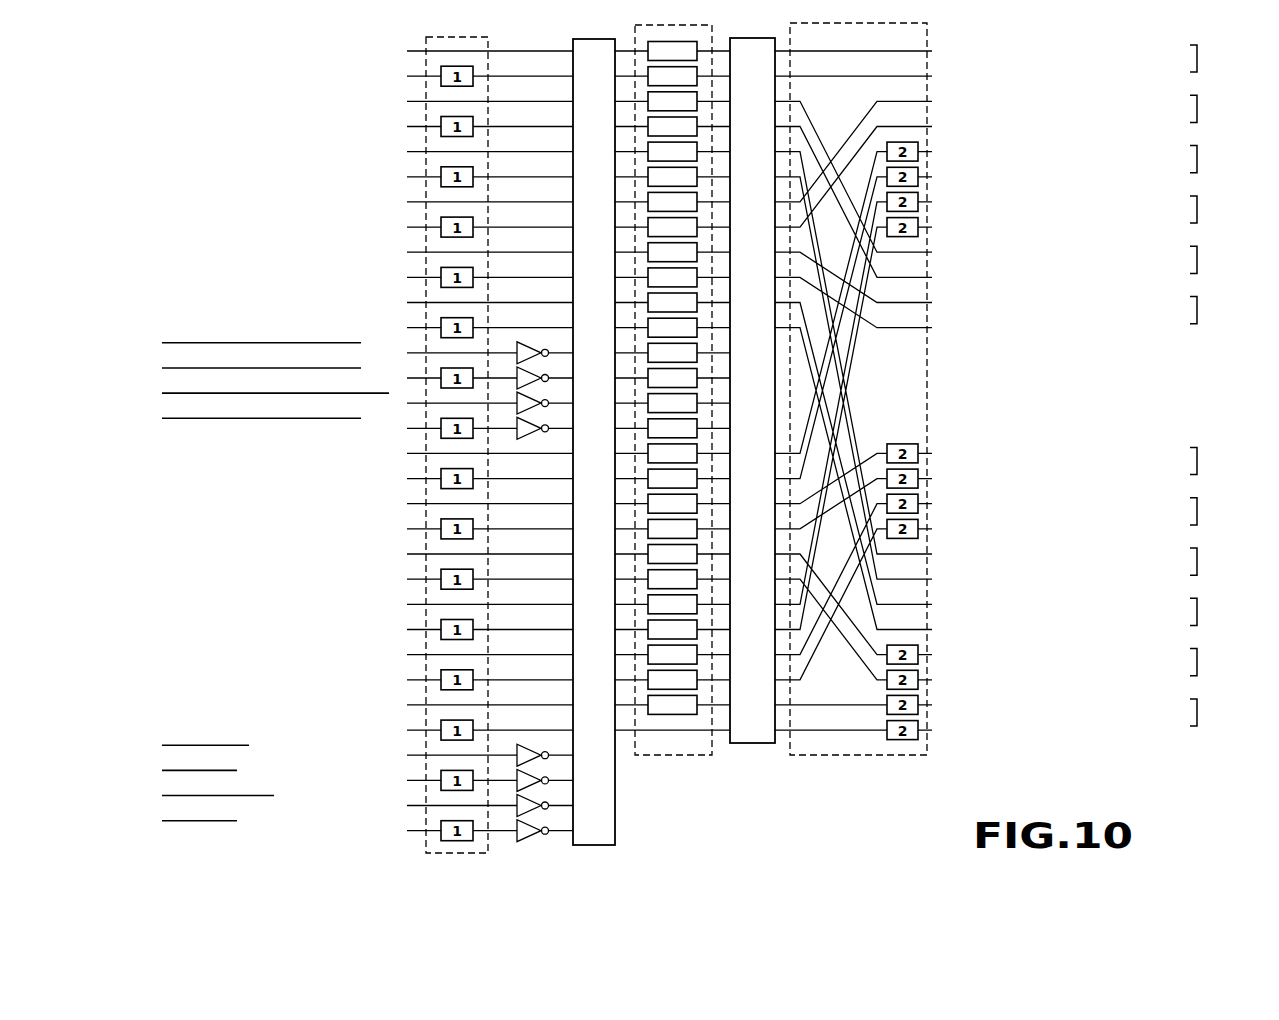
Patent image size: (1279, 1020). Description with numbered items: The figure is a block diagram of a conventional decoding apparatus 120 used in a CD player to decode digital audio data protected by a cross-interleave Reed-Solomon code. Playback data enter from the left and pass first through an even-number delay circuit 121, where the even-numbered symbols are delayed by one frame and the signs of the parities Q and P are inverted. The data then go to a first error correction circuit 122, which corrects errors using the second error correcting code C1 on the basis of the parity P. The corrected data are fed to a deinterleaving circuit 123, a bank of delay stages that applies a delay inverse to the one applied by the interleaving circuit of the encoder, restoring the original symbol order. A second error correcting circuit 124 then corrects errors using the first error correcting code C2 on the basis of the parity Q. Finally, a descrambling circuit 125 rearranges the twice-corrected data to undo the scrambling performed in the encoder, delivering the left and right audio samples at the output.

The decoding apparatus 120 is at (712, 443).
The even-number delay circuit 121 is at (488, 37).
The first error correction circuit 122 is at (615, 827).
The deinterleaving circuit 123 is at (682, 755).
The second error correcting circuit 124 is at (748, 743).
The descrambling circuit 125 is at (852, 755).